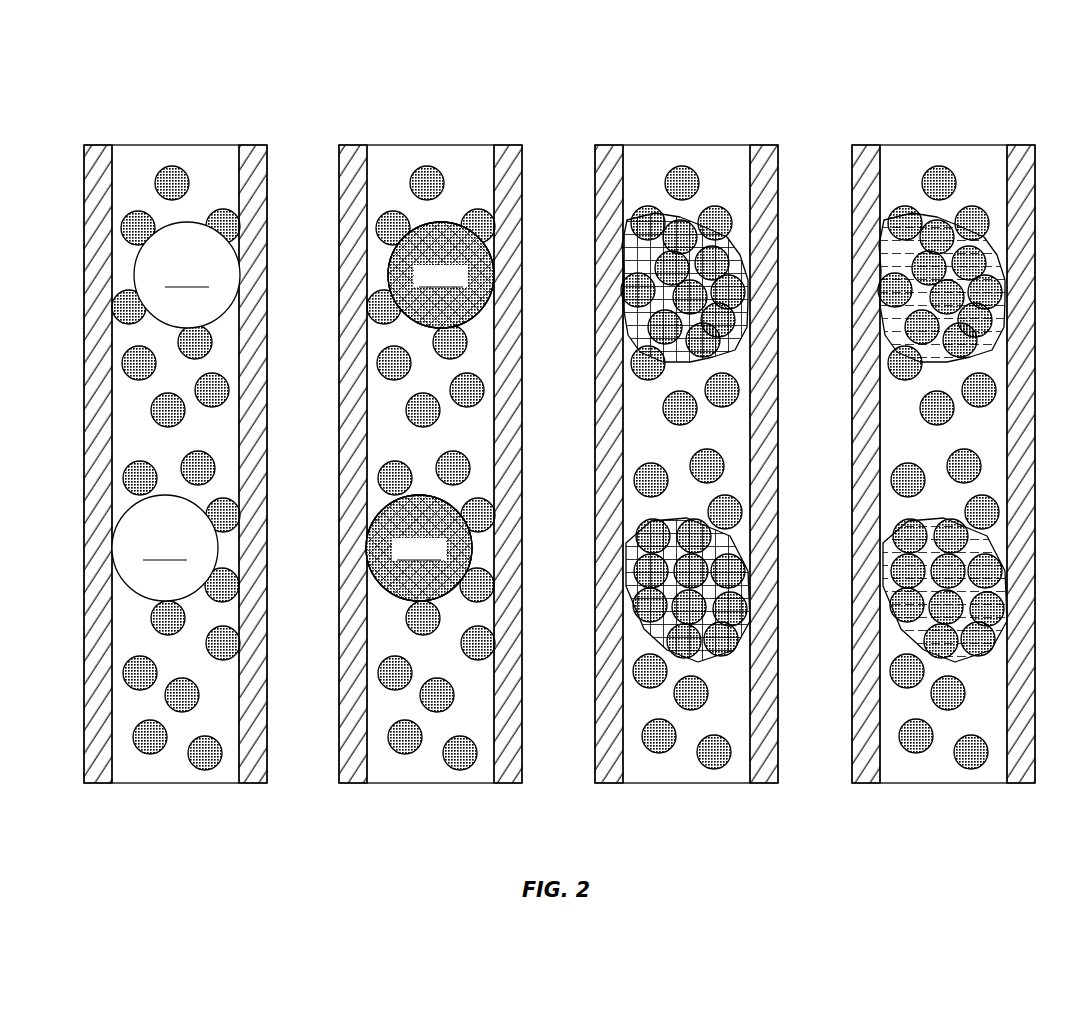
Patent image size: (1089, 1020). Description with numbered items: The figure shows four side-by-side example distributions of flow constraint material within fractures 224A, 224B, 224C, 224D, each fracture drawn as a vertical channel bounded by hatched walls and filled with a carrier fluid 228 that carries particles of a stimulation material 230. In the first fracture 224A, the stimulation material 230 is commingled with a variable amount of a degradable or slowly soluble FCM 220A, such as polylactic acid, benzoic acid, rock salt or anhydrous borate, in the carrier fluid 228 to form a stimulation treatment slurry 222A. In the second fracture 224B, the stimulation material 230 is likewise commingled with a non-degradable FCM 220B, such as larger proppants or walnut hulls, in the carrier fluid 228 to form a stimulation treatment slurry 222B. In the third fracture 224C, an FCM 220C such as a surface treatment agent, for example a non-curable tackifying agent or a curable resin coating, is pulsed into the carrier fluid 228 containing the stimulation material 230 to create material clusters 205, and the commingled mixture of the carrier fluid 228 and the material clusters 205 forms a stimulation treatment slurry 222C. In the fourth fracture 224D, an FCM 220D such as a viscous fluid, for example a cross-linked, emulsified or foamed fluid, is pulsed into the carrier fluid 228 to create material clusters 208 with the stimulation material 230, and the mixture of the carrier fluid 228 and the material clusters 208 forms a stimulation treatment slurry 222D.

The fracture 224A is at (163, 409).
The fracture 224B is at (418, 409).
The fracture 224C is at (672, 409).
The fracture 224D is at (930, 409).
The stimulation treatment slurry 222A is at (176, 494).
The stimulation treatment slurry 222B is at (431, 494).
The stimulation treatment slurry 222C is at (687, 494).
The stimulation treatment slurry 222D is at (944, 494).
The carrier fluid 228 is at (225, 720).
The stimulation material 230 is at (173, 183).
The degradable or slowly soluble flow constraint material 220A is at (176, 411).
The non-degradable flow constraint material 220B is at (430, 411).
The flow constraint material 220C is at (675, 518).
The flow constraint material 220D is at (923, 587).
The material clusters 205 is at (743, 270).
The material clusters 208 is at (995, 270).